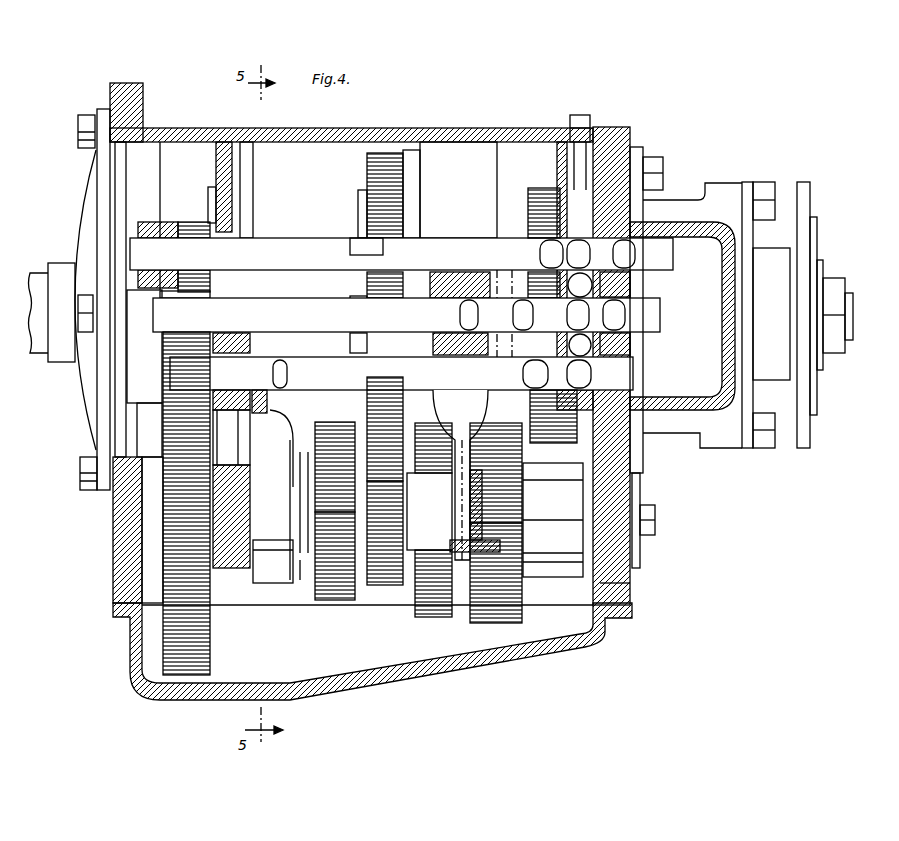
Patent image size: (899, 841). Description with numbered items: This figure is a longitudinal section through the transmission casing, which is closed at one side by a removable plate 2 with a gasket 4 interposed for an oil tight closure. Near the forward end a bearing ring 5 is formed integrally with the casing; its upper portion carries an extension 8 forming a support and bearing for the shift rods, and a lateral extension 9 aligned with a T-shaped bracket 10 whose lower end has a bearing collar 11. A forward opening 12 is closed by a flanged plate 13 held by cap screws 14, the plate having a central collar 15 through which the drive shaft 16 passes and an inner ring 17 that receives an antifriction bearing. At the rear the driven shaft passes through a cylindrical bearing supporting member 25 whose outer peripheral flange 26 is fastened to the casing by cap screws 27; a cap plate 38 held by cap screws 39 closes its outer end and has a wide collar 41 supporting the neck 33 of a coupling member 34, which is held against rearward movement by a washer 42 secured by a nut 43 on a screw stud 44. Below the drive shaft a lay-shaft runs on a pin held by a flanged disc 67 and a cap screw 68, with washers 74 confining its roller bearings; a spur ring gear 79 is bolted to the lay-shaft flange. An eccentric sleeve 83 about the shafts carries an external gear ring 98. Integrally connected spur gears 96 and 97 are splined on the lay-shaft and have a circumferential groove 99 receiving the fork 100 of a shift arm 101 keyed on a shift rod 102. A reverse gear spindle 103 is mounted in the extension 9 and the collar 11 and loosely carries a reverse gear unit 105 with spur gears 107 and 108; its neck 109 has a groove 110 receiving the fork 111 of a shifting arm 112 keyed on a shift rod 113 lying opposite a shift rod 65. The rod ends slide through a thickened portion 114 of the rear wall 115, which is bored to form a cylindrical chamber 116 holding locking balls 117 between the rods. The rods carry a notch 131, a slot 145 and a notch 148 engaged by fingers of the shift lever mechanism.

The plate 2 is at (510, 656).
The gasket 4 is at (630, 600).
The bearing ring 5 is at (247, 163).
The extension 8 is at (213, 222).
The lateral extension 9 is at (238, 503).
The bracket 10 is at (462, 517).
The bearing collar 11 is at (455, 499).
The opening 12 is at (130, 428).
The flanged plate 13 is at (97, 492).
The cap screws 14 is at (80, 140).
The central collar 15 is at (67, 362).
The drive shaft 16 is at (33, 355).
The ring 17 is at (133, 367).
The bearing supporting member 25 is at (730, 446).
The outer peripheral flange 26 is at (640, 160).
The cap screws 27 is at (661, 170).
The neck 33 is at (793, 268).
The coupling member 34 is at (812, 420).
The cap plate 38 is at (748, 449).
The cap screws 39 is at (765, 184).
The collar 41 is at (780, 260).
The washer 42 is at (822, 365).
The nut 43 is at (840, 352).
The screw stud 44 is at (853, 332).
The shift rod 65 is at (358, 198).
The flanged disc 67 is at (640, 545).
The cap screw 68 is at (655, 530).
The washers 74 is at (157, 540).
The spur ring gear 79 is at (212, 630).
The sleeve 83 is at (413, 218).
The spur gear 96 is at (475, 625).
The spur gear 97 is at (403, 600).
The external gear ring 98 is at (403, 187).
The circumferential groove 99 is at (462, 617).
The fork 100 is at (452, 483).
The shift arm 101 is at (450, 400).
The shift rod 102 is at (157, 322).
The reverse gear spindle 103 is at (250, 562).
The reverse gear unit 105 is at (345, 602).
The spur gear 107 is at (382, 586).
The spur gear 108 is at (333, 600).
The neck 109 is at (292, 573).
The circumferential groove 110 is at (293, 583).
The fork 111 is at (295, 475).
The shifting arm 112 is at (284, 430).
The shift rod 113 is at (152, 382).
The thickened portion 114 is at (632, 150).
The wall 115 is at (188, 298).
The cylindrical chamber 116 is at (622, 128).
The locking balls 117 is at (633, 287).
The notch 131 is at (352, 242).
The slot 145 is at (352, 300).
The notch 148 is at (353, 317).